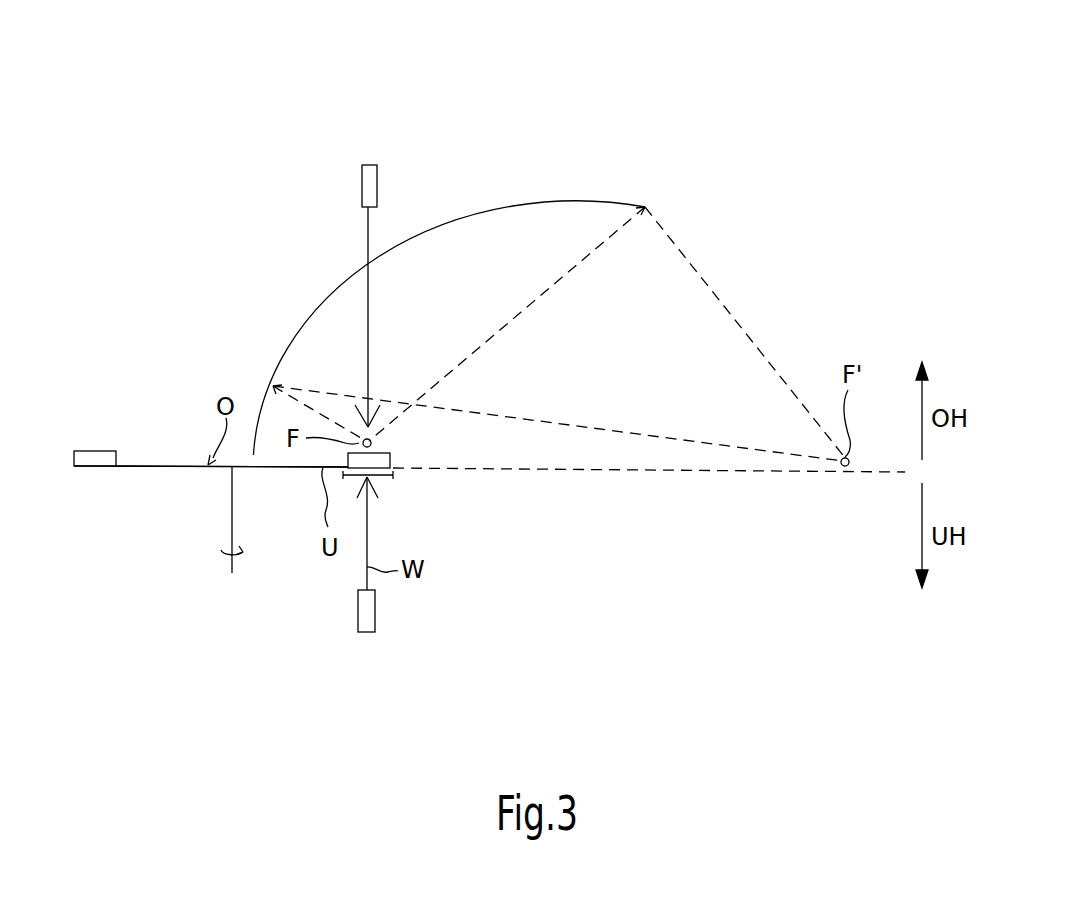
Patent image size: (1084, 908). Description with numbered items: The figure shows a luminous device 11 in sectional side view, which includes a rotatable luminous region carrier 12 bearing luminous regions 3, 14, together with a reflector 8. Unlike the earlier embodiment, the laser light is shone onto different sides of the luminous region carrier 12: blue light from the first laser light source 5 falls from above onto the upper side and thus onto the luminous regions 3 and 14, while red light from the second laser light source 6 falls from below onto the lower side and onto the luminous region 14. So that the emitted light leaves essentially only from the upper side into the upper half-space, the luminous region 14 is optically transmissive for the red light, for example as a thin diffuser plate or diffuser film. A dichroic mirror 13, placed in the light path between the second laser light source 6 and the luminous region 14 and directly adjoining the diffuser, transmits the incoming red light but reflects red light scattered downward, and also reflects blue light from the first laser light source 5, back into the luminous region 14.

The luminous region 3 is at (95, 457).
The first laser light source 5 is at (377, 185).
The second laser light source 6 is at (375, 617).
The reflector 8 is at (507, 207).
The luminous device 11 is at (657, 127).
The luminous region carrier 12 is at (185, 467).
The dichroic mirror 13 is at (385, 478).
The luminous region 14 is at (386, 462).